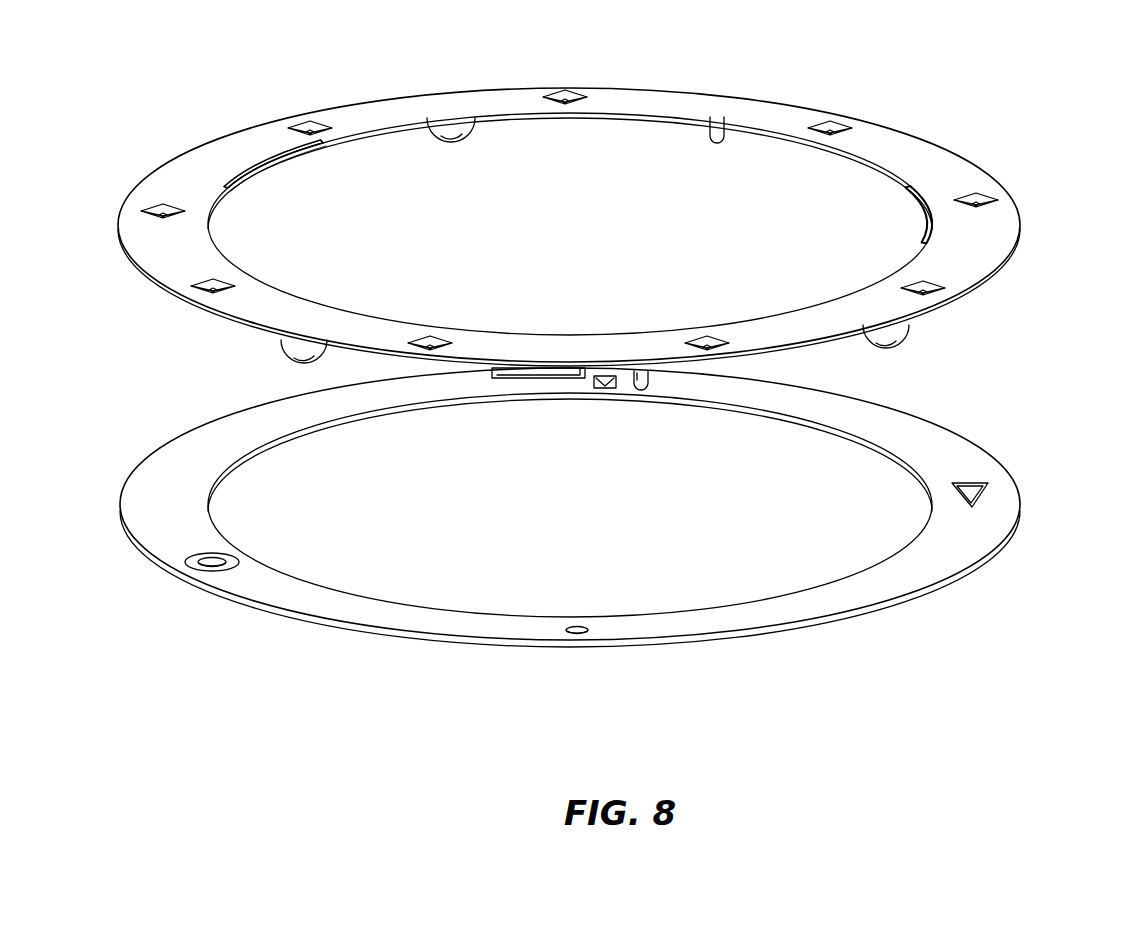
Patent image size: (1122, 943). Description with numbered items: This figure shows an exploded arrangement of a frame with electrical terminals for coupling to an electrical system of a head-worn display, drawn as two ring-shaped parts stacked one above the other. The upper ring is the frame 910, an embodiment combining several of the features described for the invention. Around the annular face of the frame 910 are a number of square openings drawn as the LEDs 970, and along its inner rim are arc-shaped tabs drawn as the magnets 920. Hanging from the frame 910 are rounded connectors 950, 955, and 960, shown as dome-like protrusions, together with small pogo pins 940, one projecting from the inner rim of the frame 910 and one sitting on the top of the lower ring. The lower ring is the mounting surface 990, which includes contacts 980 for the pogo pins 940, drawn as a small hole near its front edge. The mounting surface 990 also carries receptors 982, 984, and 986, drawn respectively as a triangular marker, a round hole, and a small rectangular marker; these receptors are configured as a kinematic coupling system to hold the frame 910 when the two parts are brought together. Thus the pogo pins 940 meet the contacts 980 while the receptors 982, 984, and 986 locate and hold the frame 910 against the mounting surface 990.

The upper ring 910 is at (1002, 222).
The tab 920 is at (294, 166).
The pin 940 is at (718, 142).
The protrusion 950 is at (896, 348).
The protrusion 955 is at (453, 140).
The protrusion 960 is at (278, 352).
The hole 970 is at (569, 93).
The hole 980 is at (578, 627).
The triangular marker 982 is at (982, 484).
The hole 984 is at (232, 560).
The marker 986 is at (604, 387).
The lower ring 990 is at (1003, 502).